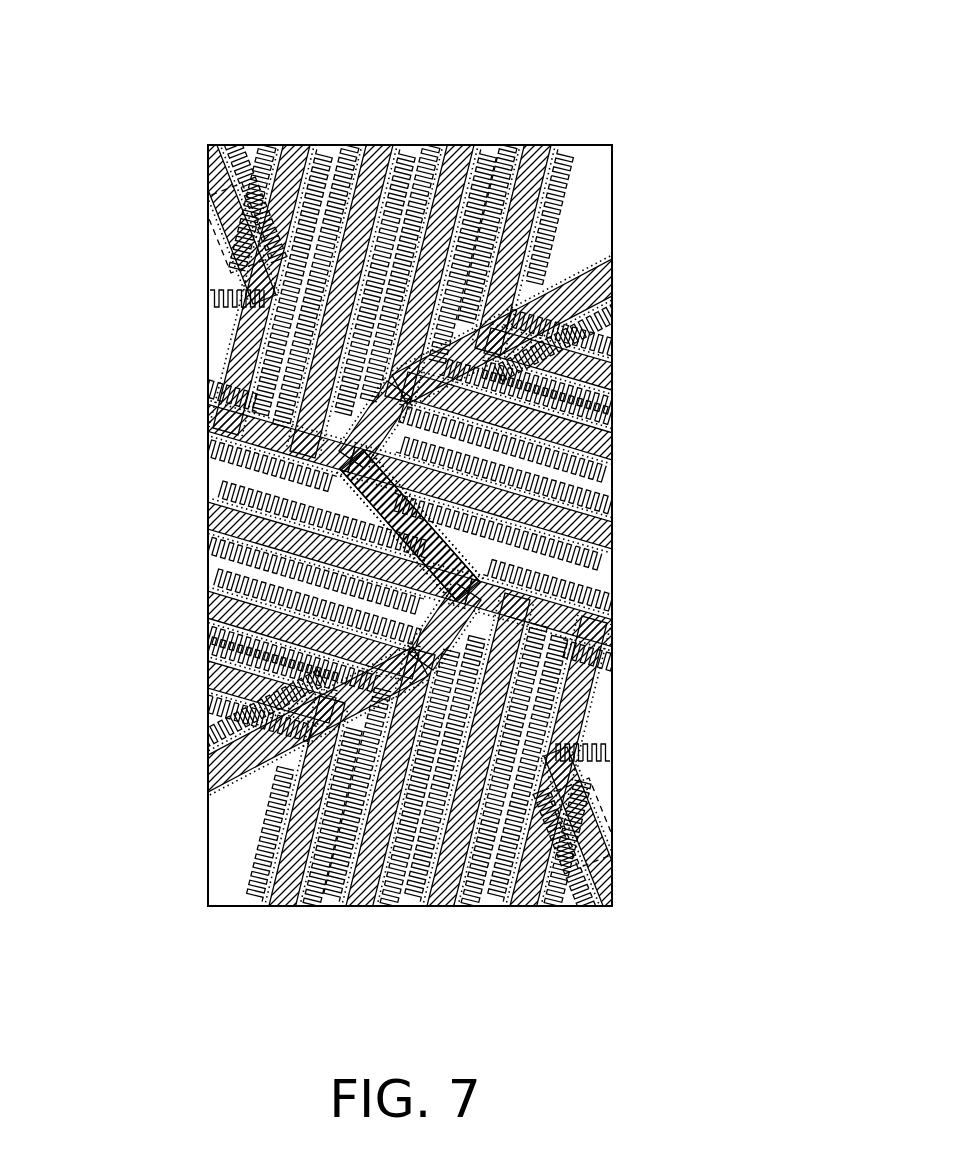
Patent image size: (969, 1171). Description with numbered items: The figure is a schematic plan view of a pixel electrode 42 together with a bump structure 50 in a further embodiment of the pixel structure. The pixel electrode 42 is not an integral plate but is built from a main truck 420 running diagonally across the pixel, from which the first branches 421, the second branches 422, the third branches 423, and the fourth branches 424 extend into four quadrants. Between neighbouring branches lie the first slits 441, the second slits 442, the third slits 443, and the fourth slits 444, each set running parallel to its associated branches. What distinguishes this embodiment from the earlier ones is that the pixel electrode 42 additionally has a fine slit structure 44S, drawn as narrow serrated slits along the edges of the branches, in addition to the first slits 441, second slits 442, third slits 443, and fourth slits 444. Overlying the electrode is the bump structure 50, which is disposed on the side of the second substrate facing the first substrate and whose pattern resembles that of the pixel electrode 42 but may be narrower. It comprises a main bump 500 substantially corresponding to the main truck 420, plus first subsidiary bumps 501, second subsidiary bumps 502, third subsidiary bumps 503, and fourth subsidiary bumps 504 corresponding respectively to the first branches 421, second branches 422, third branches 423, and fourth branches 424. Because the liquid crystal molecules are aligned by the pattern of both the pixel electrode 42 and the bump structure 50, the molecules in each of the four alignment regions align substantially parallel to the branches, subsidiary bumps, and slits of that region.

The pixel electrode 42 is at (676, 76).
The bump structure 50 is at (203, 170).
The main bump 500 is at (210, 245).
The first subsidiary bumps 501 is at (300, 148).
The third subsidiary bumps 503 is at (516, 897).
The main truck 420 is at (606, 284).
The first branches 421 is at (380, 148).
The second branches 422 is at (212, 421).
The third branches 423 is at (332, 897).
The fourth branches 424 is at (610, 522).
The first slits 441 is at (437, 160).
The second slits 442 is at (233, 481).
The third slits 443 is at (395, 880).
The fourth slits 444 is at (592, 578).
The fourth subsidiary bumps 504 is at (610, 377).
The second subsidiary bumps 502 is at (212, 688).
The fine slit structure 44S is at (602, 148).